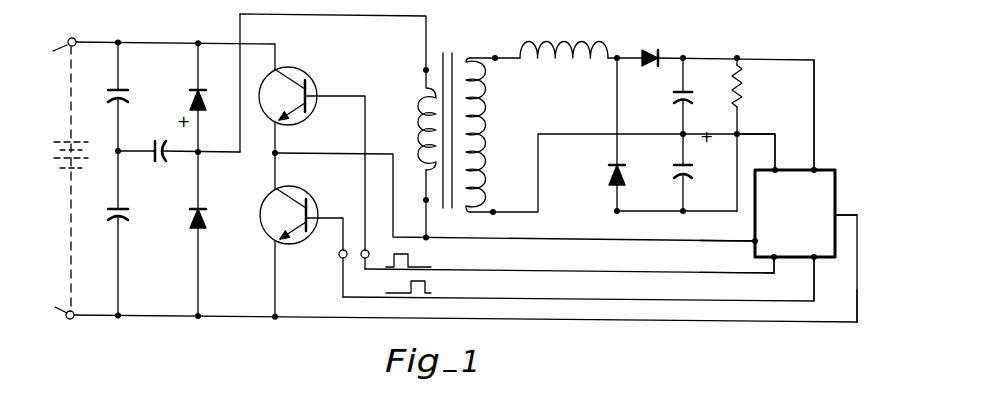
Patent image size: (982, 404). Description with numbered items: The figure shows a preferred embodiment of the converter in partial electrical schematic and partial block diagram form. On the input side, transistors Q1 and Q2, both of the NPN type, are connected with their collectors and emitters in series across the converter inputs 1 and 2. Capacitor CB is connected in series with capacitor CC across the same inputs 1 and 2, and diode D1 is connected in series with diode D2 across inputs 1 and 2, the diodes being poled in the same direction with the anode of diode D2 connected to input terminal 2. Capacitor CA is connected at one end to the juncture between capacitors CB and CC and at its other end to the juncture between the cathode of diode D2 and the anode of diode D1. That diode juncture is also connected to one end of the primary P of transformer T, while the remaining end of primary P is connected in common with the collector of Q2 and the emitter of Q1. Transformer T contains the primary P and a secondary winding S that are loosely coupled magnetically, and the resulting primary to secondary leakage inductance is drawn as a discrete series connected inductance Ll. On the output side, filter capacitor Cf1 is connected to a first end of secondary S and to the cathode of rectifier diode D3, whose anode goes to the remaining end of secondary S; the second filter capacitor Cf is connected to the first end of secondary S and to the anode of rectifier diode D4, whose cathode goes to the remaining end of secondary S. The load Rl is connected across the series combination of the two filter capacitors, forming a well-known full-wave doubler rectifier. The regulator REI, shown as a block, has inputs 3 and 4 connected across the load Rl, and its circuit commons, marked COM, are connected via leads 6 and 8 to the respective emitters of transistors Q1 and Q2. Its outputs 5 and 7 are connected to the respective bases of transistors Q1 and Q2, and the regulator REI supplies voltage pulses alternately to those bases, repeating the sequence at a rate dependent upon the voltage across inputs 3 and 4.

The converter input 1 is at (59, 50).
The converter input 2 is at (58, 300).
The regulator input 3 is at (776, 157).
The regulator input 4 is at (815, 156).
The regulator output 5 is at (740, 269).
The lead 6 is at (739, 239).
The regulator output 7 is at (799, 300).
The lead 8 is at (846, 320).
The capacitor CB is at (132, 102).
The capacitor CA is at (157, 165).
The capacitor CC is at (131, 223).
The diode D1 is at (193, 85).
The diode D2 is at (205, 222).
The rectifier diode D3 is at (651, 47).
The rectifier diode D4 is at (624, 186).
The transistor Q1 is at (311, 80).
The transistor Q2 is at (315, 204).
The transformer T is at (444, 53).
The primary P is at (421, 136).
The secondary winding S is at (481, 104).
The leakage inductance Ll is at (555, 47).
The filter capacitor Cf1 is at (676, 98).
The filter capacitor Cf is at (691, 179).
The load Rl is at (741, 103).
The regulator REI is at (813, 227).
The common terminal COM is at (858, 202).